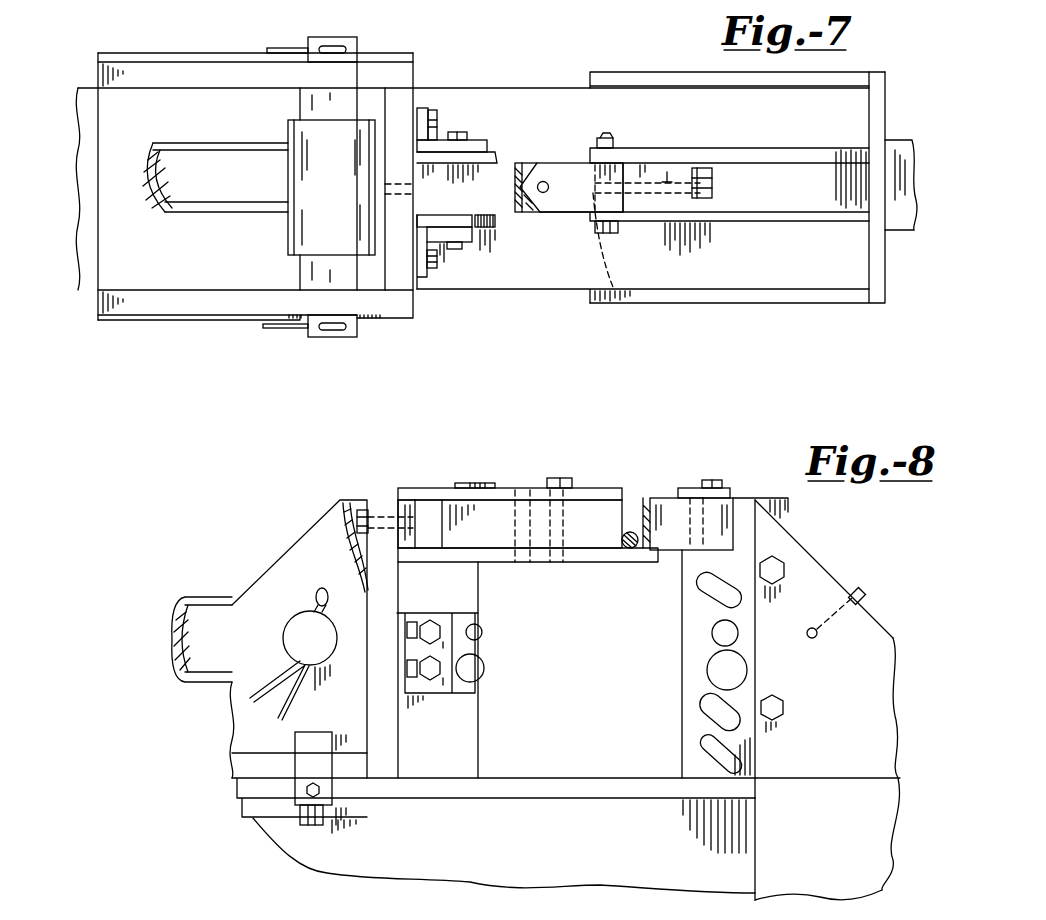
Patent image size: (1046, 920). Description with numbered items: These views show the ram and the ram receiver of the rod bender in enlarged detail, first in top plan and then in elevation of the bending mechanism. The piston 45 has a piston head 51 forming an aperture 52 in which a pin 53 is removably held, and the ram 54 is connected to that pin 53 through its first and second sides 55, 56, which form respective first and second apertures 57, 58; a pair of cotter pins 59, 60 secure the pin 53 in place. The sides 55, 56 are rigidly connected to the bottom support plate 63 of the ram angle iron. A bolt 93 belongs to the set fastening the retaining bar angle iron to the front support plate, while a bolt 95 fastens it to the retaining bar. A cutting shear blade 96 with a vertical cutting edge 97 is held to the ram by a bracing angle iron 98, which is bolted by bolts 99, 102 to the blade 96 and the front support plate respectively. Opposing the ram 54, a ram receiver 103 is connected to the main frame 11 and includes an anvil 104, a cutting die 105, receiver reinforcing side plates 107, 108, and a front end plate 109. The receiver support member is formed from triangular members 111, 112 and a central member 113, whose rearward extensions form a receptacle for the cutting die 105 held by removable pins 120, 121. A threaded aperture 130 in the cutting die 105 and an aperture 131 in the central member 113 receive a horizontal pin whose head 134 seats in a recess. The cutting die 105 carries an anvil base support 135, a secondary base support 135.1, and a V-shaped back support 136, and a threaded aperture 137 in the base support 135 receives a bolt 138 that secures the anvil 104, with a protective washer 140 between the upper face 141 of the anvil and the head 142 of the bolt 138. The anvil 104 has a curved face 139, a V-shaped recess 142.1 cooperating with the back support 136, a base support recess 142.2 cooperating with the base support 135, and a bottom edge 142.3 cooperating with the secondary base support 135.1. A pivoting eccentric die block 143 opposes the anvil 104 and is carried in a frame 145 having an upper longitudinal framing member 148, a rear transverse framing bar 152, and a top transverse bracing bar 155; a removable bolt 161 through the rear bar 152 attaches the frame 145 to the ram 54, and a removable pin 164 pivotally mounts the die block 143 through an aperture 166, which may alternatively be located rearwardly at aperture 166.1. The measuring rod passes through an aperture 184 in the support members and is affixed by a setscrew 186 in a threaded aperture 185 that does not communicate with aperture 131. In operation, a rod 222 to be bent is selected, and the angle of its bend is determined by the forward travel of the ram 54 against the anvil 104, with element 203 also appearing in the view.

In FIG. 7, the main frame 11 is at (557, 106).
In FIG. 8, the main frame 11 is at (480, 824).
In FIG. 7, the piston 45 is at (183, 157).
In FIG. 8, the piston 45 is at (202, 639).
In FIG. 7, the piston head 51 is at (315, 235).
In FIG. 7, the aperture 52 is at (222, 192).
In FIG. 7, the pin 53 is at (330, 37).
In FIG. 7, the ram 54 is at (137, 327).
In FIG. 7, the first side 55 is at (207, 303).
In FIG. 8, the first side 55 is at (286, 575).
In FIG. 7, the second side 56 is at (188, 75).
In FIG. 7, the first aperture 57 is at (367, 322).
In FIG. 7, the second aperture 58 is at (357, 58).
In FIG. 7, the cotter pin 59 is at (283, 327).
In FIG. 7, the cotter pin 60 is at (270, 48).
In FIG. 7, the bottom support plate 63 is at (113, 265).
In FIG. 8, the bottom support plate 63 is at (232, 763).
In FIG. 7, the bolt 93 is at (435, 268).
In FIG. 7, the bolt 95 is at (455, 249).
In FIG. 7, the cutting shear blade 96 is at (430, 165).
In FIG. 7, the cutting edge 97 is at (495, 152).
In FIG. 7, the bracing angle iron 98 is at (480, 140).
In FIG. 7, the bolt 99 is at (458, 132).
In FIG. 7, the bolt 102 is at (432, 108).
In FIG. 7, the ram receiver 103 is at (806, 308).
In FIG. 8, the ram receiver 103 is at (830, 557).
In FIG. 8, the anvil 104 is at (650, 497).
In FIG. 7, the cutting die 105 is at (585, 172).
In FIG. 7, the receiver reinforcing side plate 107 is at (780, 295).
In FIG. 8, the receiver reinforcing side plate 107 is at (850, 835).
In FIG. 7, the receiver reinforcing side plate 108 is at (641, 72).
In FIG. 7, the front end plate 109 is at (877, 125).
In FIG. 7, the triangular member 111 is at (793, 222).
In FIG. 7, the triangular member 112 is at (790, 148).
In FIG. 7, the central member 113 is at (780, 200).
In FIG. 8, the removable pin 120 is at (788, 710).
In FIG. 7, the removable pin 121 is at (607, 233).
In FIG. 8, the removable pin 121 is at (774, 585).
In FIG. 7, the threaded aperture 130 is at (614, 288).
In FIG. 7, the aperture 131 is at (672, 163).
In FIG. 7, the head 134 is at (706, 172).
In FIG. 7, the anvil base support 135 is at (523, 205).
In FIG. 7, the secondary base support 135.1 is at (515, 211).
In FIG. 7, the anvil V-shaped back support 136 is at (528, 172).
In FIG. 7, the threaded aperture 137 is at (549, 190).
In FIG. 8, the bolt 138 is at (700, 488).
In FIG. 8, the curved face 139 is at (640, 522).
In FIG. 8, the protective washer 140 is at (741, 490).
In FIG. 8, the upper face 141 is at (670, 497).
In FIG. 8, the head 142 is at (713, 480).
In FIG. 8, the V-shaped recess 142.1 is at (722, 515).
In FIG. 8, the base support recess 142.2 is at (698, 553).
In FIG. 8, the bottom edge 142.3 is at (663, 565).
In FIG. 8, the die block 143 is at (425, 507).
In FIG. 8, the frame 145 is at (403, 508).
In FIG. 8, the upper longitudinal framing member 148 is at (438, 518).
In FIG. 8, the rear transverse framing bar 152 is at (362, 520).
In FIG. 8, the top transverse bracing bar 155 is at (458, 483).
In FIG. 8, the bolt 161 is at (345, 530).
In FIG. 8, the removable pin 164 is at (557, 478).
In FIG. 8, the aperture 166 is at (565, 540).
In FIG. 8, the aperture 166.1 is at (512, 487).
In FIG. 8, the aperture 184 is at (807, 636).
In FIG. 8, the threaded aperture 185 is at (830, 622).
In FIG. 8, the setscrew 186 is at (866, 590).
In FIG. 7, the bolt 203 is at (893, 232).
In FIG. 8, the rod 222 is at (624, 545).